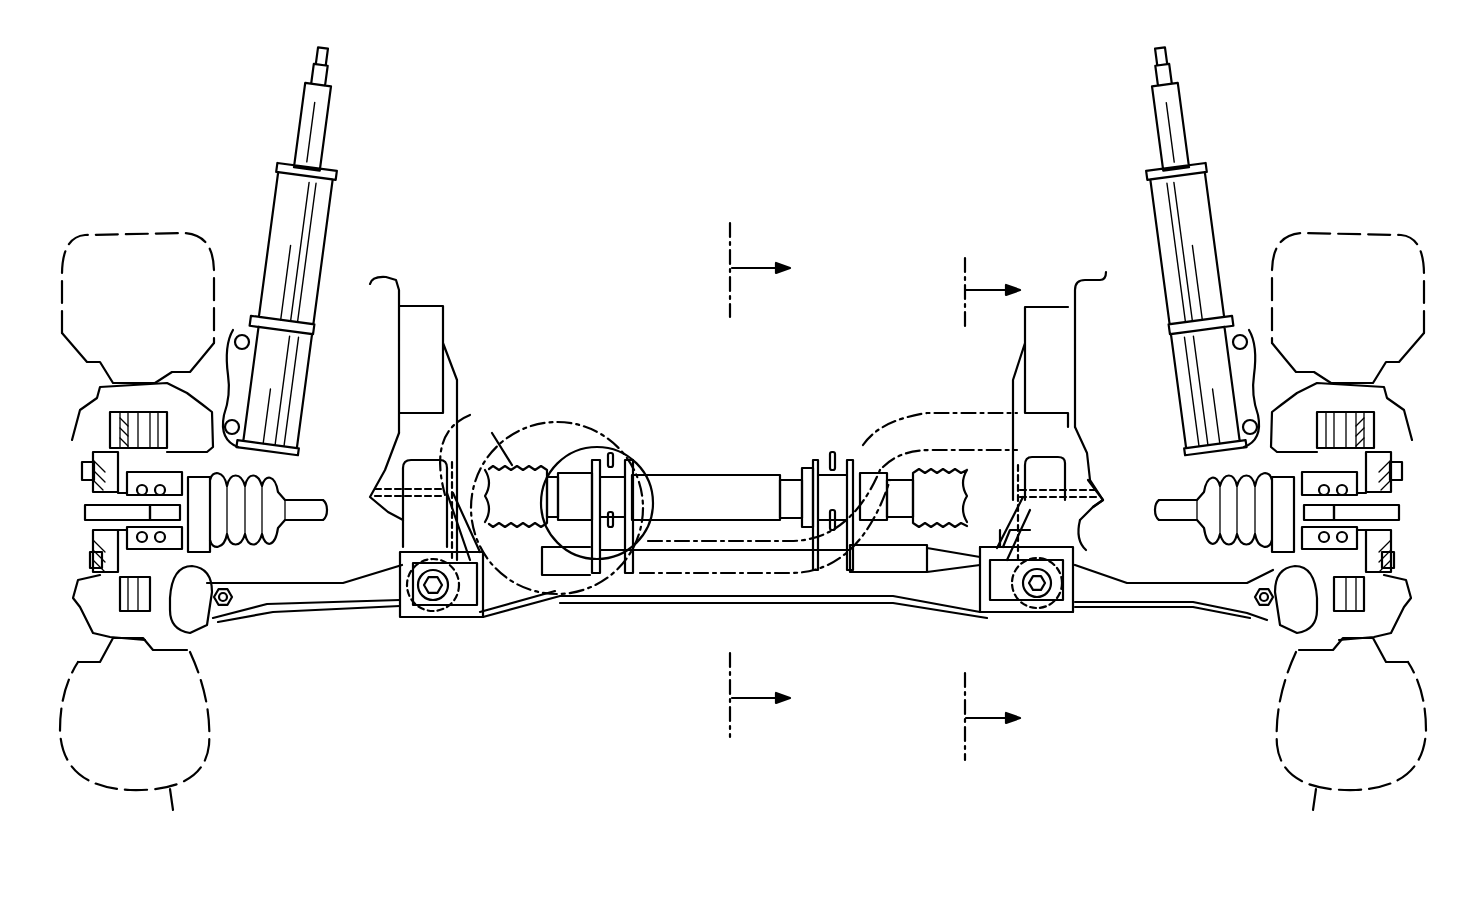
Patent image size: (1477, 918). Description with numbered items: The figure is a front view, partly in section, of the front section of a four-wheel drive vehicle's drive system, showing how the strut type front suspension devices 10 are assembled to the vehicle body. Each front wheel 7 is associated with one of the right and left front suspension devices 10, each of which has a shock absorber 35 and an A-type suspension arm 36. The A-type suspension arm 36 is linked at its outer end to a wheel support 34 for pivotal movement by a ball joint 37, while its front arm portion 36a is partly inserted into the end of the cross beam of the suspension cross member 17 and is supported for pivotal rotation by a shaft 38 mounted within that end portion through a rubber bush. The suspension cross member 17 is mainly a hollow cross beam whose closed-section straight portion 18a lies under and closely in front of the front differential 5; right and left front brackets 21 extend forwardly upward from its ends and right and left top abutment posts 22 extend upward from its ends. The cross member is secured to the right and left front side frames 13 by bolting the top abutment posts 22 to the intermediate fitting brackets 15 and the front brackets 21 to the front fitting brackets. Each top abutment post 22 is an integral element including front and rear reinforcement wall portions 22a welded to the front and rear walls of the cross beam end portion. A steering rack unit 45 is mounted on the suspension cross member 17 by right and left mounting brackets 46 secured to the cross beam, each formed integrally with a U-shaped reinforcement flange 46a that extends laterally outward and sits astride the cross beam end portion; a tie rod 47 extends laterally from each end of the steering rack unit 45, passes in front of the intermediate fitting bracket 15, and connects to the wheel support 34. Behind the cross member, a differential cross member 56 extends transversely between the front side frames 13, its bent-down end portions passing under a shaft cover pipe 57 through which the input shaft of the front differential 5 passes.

The front suspension device 10 is at (380, 168).
The front wheel 7 is at (172, 818).
The shock absorber 35 is at (1207, 192).
The wheel support 34 is at (1393, 577).
The tie rod 47 is at (312, 503).
The ball joint 37 is at (1283, 596).
The A-type suspension arm 36 is at (740, 639).
The front arm portion 36a is at (1147, 612).
The front bracket 21 is at (1093, 525).
The front side frame 13 is at (442, 306).
The intermediate fitting bracket 15 is at (1068, 453).
The top abutment post 22 is at (1097, 517).
The reinforcement wall portion 22a is at (1000, 587).
The shaft 38 is at (1038, 590).
The suspension cross member 17 is at (664, 614).
The straight portion 18a is at (713, 590).
The differential cross member 56 is at (670, 576).
The U-shaped reinforcement flange 46a is at (877, 563).
The steering rack unit 45 is at (758, 455).
The mounting bracket 46 is at (623, 462).
The front differential 5 is at (588, 422).
The shaft cover pipe 57 is at (553, 440).